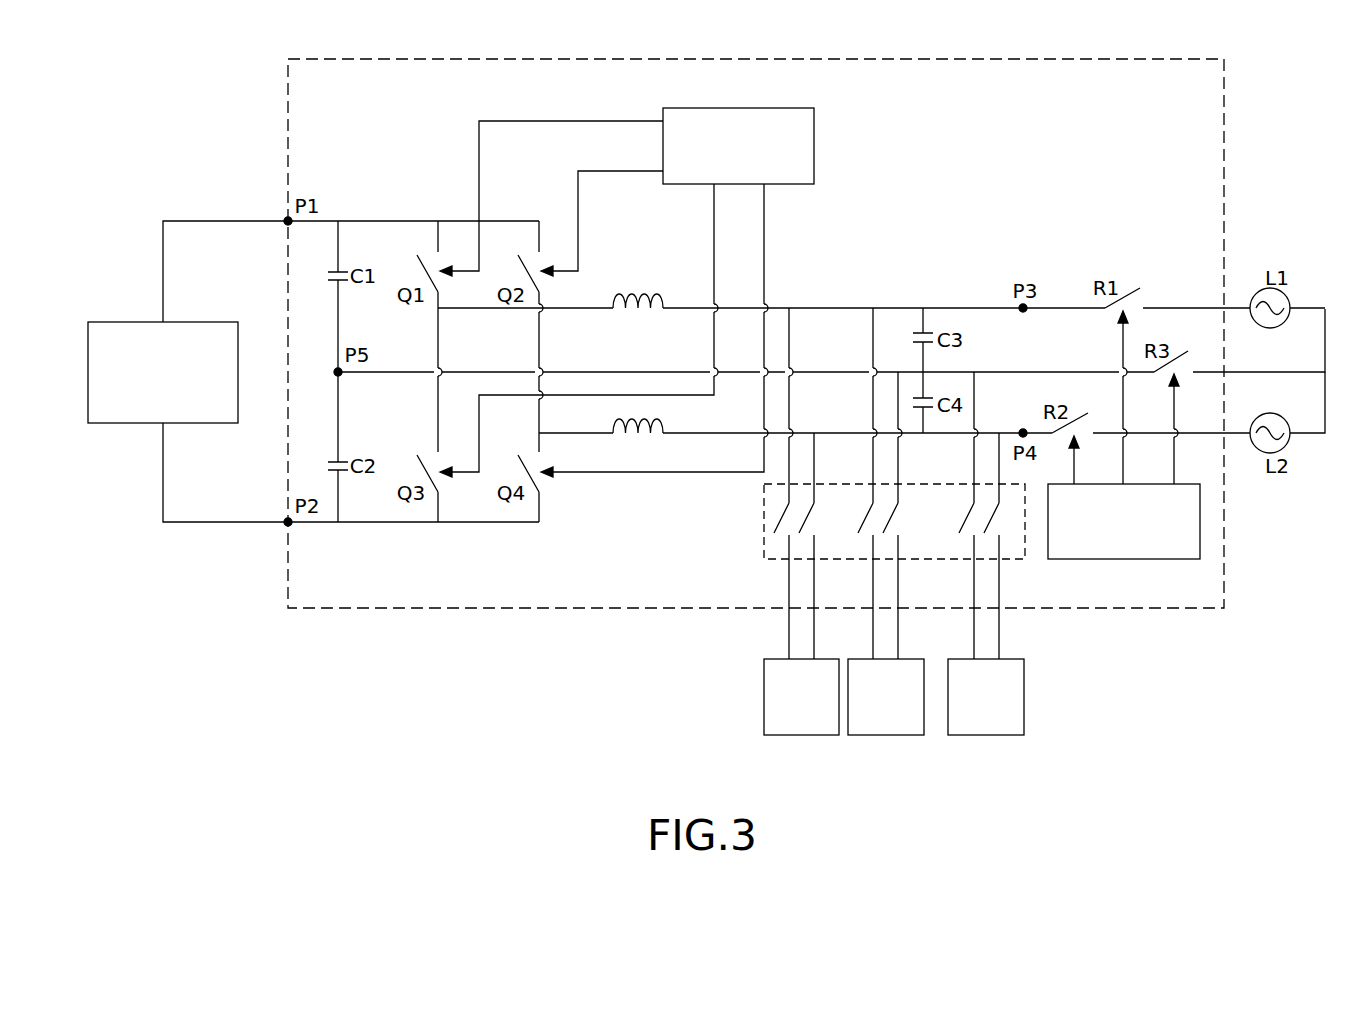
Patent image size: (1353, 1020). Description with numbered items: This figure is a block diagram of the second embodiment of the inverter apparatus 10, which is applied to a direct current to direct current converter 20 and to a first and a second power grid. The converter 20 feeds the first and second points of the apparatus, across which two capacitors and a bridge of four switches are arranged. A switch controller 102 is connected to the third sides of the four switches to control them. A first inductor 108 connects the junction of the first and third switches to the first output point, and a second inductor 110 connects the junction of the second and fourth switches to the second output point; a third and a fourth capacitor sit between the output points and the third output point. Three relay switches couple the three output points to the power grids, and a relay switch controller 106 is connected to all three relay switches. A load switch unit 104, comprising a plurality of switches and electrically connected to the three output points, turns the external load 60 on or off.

The inverter apparatus 10 is at (677, 62).
The direct current to direct current converter 20 is at (153, 326).
The external load 60 is at (801, 735).
The switch controller 102 is at (740, 108).
The load switch unit 104 is at (763, 517).
The relay switch controller 106 is at (1123, 559).
The first inductor 108 is at (640, 293).
The second inductor 110 is at (650, 421).